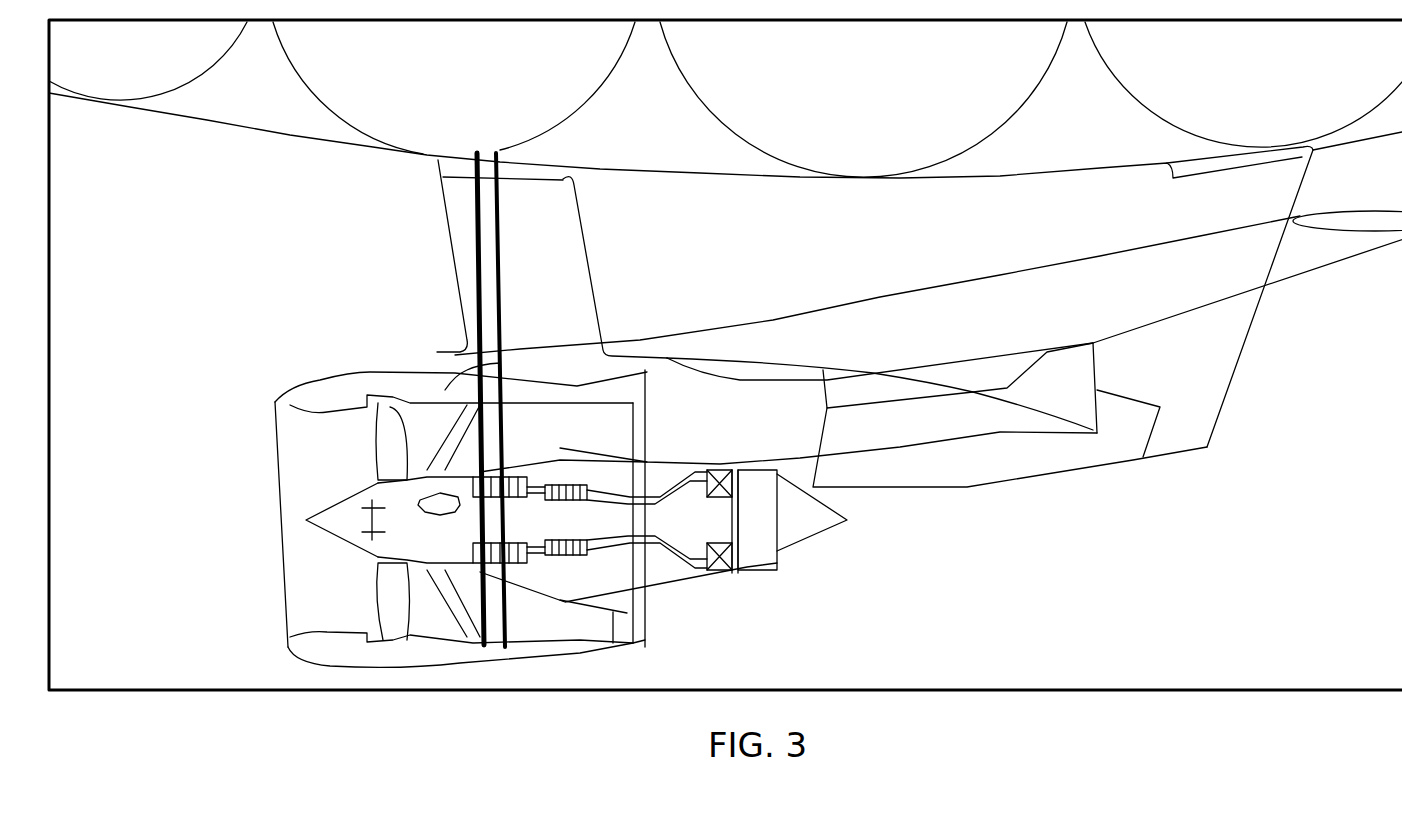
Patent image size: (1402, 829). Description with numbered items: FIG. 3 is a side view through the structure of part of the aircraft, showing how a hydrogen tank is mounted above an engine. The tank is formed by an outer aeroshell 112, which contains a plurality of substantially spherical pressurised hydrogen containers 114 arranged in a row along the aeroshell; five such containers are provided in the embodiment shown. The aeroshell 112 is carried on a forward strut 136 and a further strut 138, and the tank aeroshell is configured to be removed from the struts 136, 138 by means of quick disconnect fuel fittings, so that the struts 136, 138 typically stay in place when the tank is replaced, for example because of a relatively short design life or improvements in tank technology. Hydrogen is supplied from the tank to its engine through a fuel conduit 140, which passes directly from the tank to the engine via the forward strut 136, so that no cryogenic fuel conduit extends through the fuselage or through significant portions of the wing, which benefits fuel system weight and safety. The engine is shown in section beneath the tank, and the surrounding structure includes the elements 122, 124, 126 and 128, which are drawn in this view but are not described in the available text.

The outer aeroshell 112 is at (1003, 165).
The spherical pressurised hydrogen containers 114 is at (763, 152).
The lower fairing 122 is at (960, 467).
The wing root 124 is at (827, 408).
The wing 126 is at (1092, 337).
The aft pylon 128 is at (650, 347).
The forward strut 136 is at (445, 232).
The strut 138 is at (1253, 330).
The fuel conduit 140 is at (477, 285).